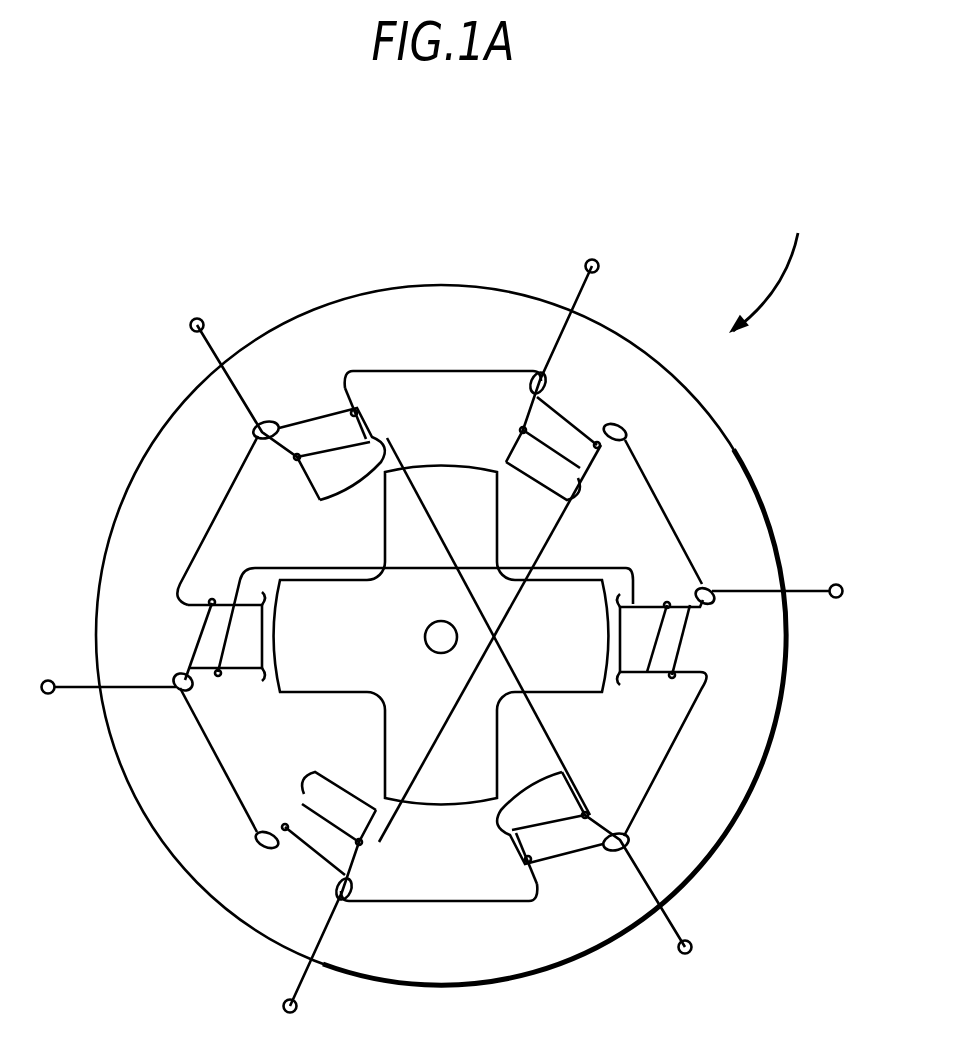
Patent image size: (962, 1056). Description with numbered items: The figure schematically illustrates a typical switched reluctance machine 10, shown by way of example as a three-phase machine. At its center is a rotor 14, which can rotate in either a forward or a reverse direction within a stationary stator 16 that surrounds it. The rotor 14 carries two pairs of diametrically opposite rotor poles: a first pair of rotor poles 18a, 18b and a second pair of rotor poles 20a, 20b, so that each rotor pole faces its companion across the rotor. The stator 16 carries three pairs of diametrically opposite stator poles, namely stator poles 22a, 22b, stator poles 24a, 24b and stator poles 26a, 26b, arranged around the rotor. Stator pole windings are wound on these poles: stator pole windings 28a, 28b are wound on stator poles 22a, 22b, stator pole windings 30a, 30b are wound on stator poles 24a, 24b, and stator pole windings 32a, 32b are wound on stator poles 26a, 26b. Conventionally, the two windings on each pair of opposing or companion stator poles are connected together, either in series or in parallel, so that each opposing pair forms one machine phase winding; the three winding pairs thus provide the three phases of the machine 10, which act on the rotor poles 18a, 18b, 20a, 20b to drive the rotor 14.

The switched reluctance machine 10 is at (769, 261).
The rotor 14 is at (596, 692).
The stator 16 is at (148, 468).
The rotor pole 18a is at (308, 690).
The rotor pole 18b is at (590, 572).
The rotor pole 20a is at (437, 468).
The rotor pole 20b is at (432, 803).
The stator pole 22a is at (185, 608).
The stator pole 22b is at (703, 567).
The stator pole 24a is at (355, 368).
The stator pole 24b is at (530, 904).
The stator pole 26a is at (633, 430).
The stator pole 26b is at (250, 837).
The stator pole winding 28a is at (193, 717).
The stator pole winding 28b is at (687, 645).
The stator pole winding 30a is at (298, 420).
The stator pole winding 30b is at (593, 813).
The stator pole winding 32a is at (518, 430).
The stator pole winding 32b is at (313, 853).